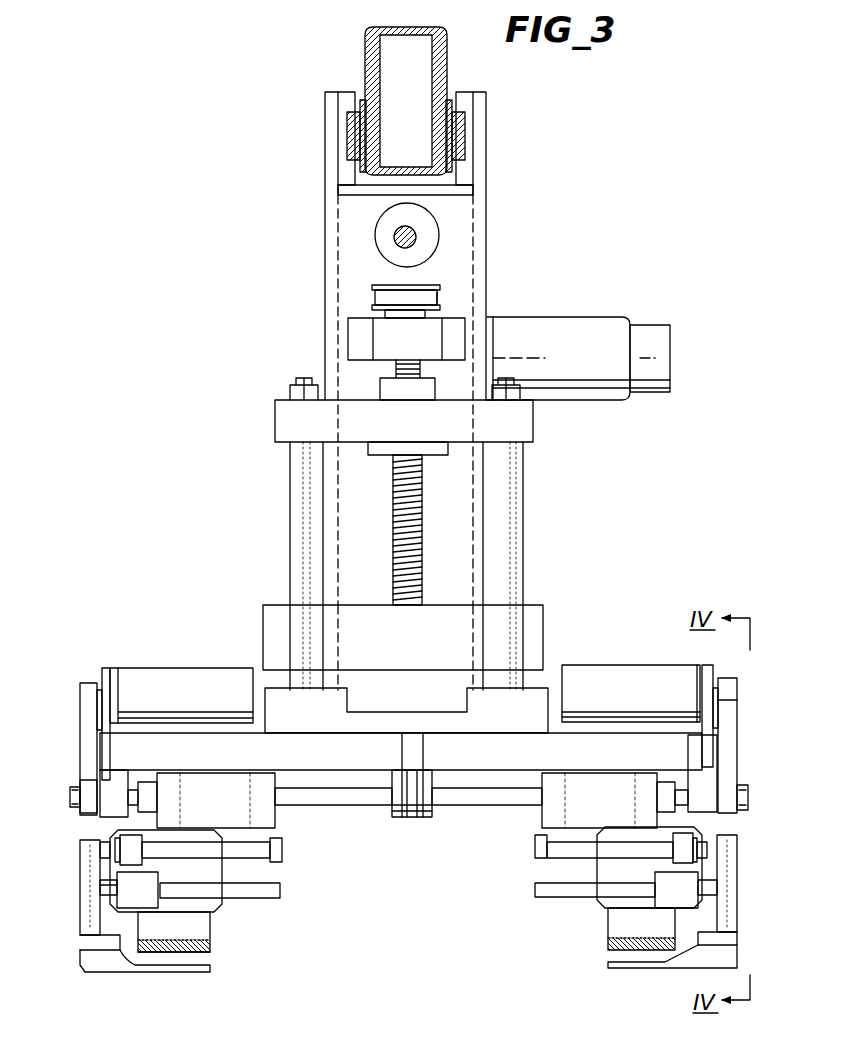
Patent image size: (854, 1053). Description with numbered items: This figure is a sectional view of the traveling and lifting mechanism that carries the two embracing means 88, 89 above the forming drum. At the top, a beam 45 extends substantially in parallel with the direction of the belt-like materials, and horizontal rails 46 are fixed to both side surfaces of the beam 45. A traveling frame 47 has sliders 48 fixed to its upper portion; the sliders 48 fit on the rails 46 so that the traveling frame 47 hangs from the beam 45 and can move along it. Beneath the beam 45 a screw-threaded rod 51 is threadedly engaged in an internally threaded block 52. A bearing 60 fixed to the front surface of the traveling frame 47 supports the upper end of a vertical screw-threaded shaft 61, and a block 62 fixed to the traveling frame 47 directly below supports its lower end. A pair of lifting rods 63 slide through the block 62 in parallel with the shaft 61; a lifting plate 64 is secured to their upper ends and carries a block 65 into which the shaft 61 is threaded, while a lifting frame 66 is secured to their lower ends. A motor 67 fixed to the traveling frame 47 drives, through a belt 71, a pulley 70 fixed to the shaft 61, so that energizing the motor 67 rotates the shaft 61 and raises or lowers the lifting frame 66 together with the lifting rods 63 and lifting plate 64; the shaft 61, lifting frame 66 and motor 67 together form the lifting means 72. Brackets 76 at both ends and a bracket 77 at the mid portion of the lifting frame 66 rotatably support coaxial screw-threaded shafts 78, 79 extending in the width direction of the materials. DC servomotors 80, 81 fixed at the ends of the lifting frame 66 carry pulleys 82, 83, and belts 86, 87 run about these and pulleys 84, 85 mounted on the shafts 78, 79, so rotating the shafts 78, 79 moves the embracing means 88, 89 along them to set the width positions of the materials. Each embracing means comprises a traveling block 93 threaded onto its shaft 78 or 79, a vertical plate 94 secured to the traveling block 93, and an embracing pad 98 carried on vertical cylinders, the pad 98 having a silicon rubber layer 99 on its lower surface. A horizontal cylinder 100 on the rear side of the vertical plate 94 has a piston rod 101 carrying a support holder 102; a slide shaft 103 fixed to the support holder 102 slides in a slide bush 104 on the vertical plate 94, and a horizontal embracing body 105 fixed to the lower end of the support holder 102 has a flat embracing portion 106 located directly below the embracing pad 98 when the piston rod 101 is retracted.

The beam 45 is at (366, 50).
The horizontal rails 46 is at (350, 118).
The traveling frame 47 is at (478, 212).
The sliders 48 is at (344, 174).
The screw-threaded rod 51 is at (417, 238).
The internally threaded block 52 is at (388, 222).
The bearing 60 is at (355, 332).
The screw-threaded shaft 61 is at (422, 536).
The block 62 is at (545, 636).
The lifting rods 63 is at (293, 500).
The lifting plate 64 is at (525, 418).
The block 65 is at (383, 388).
The lifting frame 66 is at (375, 745).
The motor 67 is at (577, 317).
The pulley 70 is at (378, 288).
The belt 71 is at (438, 298).
The lifting means 72 is at (538, 475).
The brackets 76 is at (110, 790).
The bracket 77 is at (408, 818).
The screw-threaded shaft 78 is at (352, 802).
The screw-threaded shaft 79 is at (462, 802).
The DC servomotor 80 is at (188, 670).
The DC servomotor 81 is at (622, 667).
The pulley 82 is at (85, 683).
The pulley 83 is at (738, 692).
The pulley 84 is at (80, 812).
The pulley 85 is at (738, 806).
The belt 86 is at (102, 722).
The belt 87 is at (714, 722).
The embracing means 88 is at (404, 921).
The embracing means 89 is at (590, 900).
The traveling block 93 is at (265, 818).
The vertical plate 94 is at (222, 872).
The embracing pad 98 is at (205, 928).
The rubber layer 99 is at (208, 960).
The horizontal cylinder 100 is at (284, 850).
The piston rod 101 is at (100, 846).
The support holder 102 is at (80, 890).
The slide shaft 103 is at (282, 890).
The slide bush 104 is at (118, 905).
The horizontal embracing body 105 is at (88, 963).
The flat embracing portion 106 is at (165, 975).